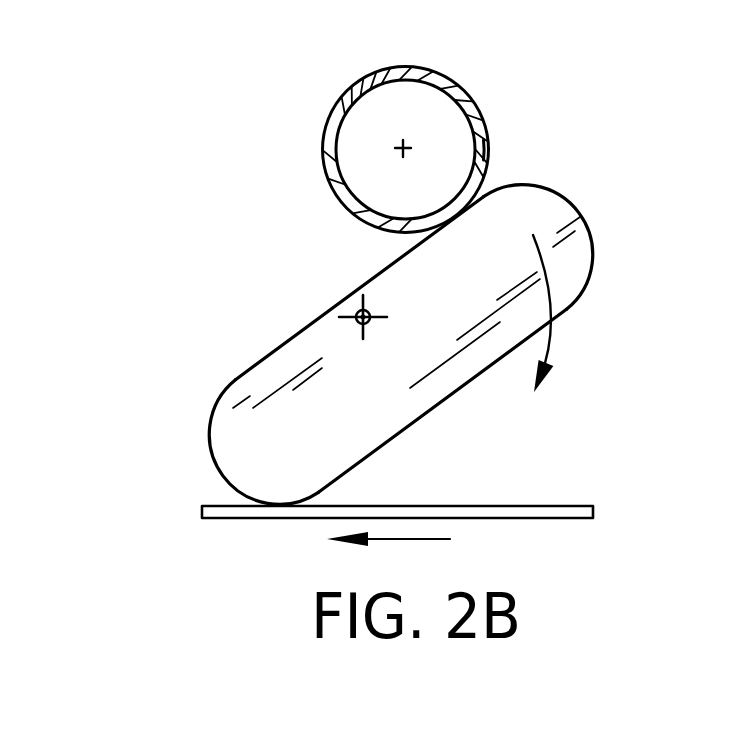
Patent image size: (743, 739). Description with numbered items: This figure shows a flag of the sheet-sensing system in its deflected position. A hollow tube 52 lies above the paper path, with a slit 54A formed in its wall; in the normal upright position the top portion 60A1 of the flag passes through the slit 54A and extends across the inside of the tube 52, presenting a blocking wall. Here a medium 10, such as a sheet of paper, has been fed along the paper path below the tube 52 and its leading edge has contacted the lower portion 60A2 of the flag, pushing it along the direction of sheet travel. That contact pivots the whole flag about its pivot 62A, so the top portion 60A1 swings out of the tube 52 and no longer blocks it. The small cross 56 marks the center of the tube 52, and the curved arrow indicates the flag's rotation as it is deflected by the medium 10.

The tube 52 is at (403, 72).
The roller axis 56 is at (403, 148).
The slit 54A is at (483, 150).
The top portion of the flag 60A1 is at (582, 226).
The lower portion of the flag 60A2 is at (258, 447).
The pivot 62A is at (357, 313).
The medium 10 is at (517, 517).